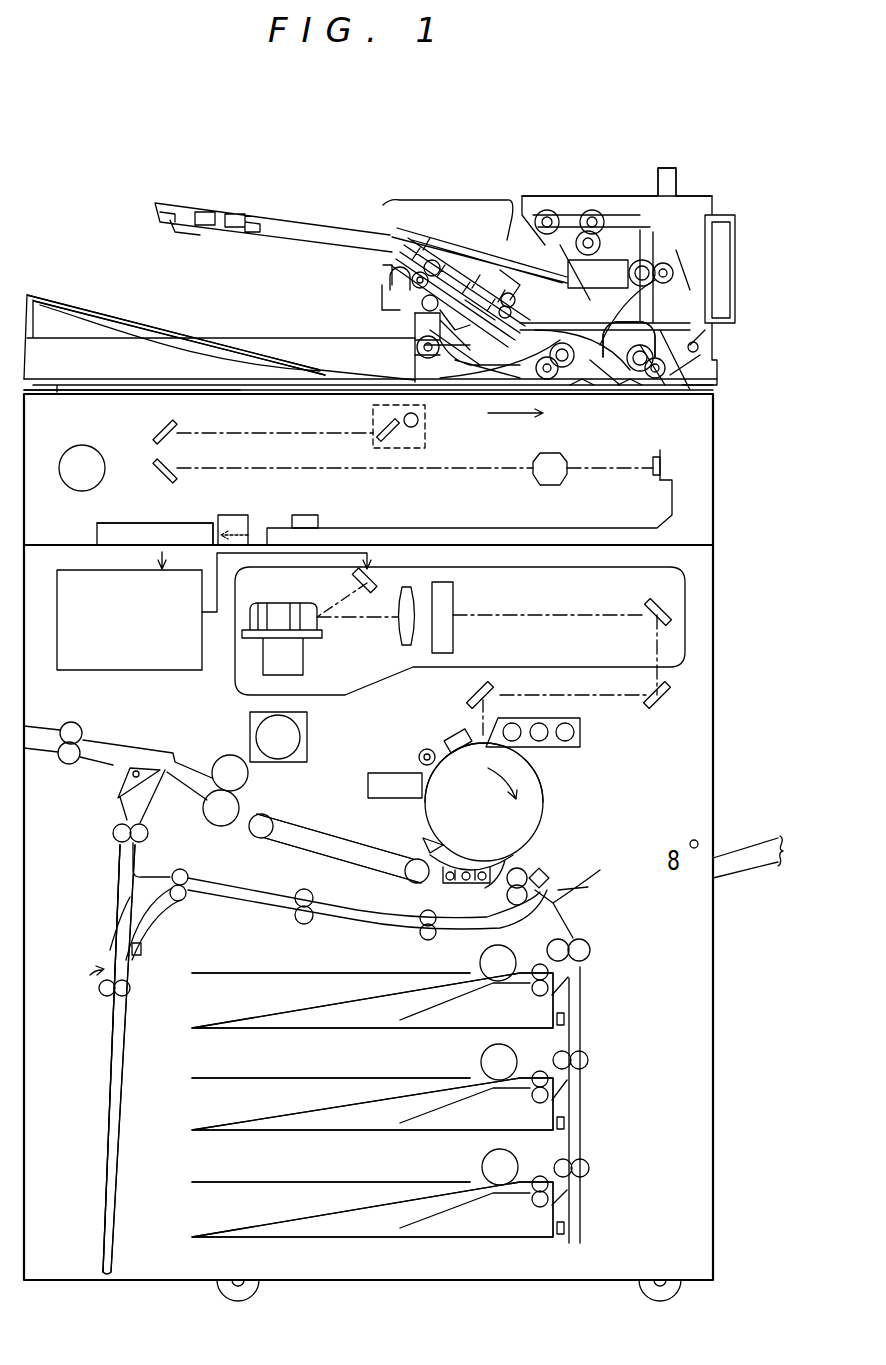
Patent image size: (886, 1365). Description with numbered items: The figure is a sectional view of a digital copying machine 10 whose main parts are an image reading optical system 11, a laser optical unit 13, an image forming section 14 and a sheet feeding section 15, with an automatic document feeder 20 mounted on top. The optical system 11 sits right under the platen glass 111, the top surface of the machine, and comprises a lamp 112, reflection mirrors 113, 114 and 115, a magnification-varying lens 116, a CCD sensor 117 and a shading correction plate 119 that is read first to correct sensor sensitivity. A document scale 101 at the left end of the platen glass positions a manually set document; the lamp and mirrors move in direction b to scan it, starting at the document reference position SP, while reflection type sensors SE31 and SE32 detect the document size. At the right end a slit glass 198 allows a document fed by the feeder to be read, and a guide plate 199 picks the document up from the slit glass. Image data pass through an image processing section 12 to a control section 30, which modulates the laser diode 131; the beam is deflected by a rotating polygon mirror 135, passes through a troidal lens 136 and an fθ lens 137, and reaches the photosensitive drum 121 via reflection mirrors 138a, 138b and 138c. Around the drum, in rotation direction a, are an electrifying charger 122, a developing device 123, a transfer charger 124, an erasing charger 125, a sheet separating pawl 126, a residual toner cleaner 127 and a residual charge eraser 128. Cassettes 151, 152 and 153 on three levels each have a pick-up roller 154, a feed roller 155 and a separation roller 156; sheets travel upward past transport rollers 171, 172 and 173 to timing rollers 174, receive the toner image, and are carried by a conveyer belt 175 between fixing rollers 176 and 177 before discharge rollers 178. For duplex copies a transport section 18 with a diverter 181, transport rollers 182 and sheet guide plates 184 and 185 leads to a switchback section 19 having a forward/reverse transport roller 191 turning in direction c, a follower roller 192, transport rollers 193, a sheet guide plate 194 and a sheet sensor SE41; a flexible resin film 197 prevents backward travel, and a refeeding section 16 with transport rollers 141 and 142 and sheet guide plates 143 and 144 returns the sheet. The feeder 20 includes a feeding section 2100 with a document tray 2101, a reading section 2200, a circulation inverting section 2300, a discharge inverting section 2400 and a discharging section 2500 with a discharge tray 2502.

The copying machine 10 is at (753, 583).
The image reading optical system 11 is at (427, 482).
The image processing section 12 is at (128, 523).
The laser optical unit 13 is at (690, 635).
The image forming section 14 is at (548, 773).
The sheet feeding section 15 is at (188, 1203).
The refeeding section 16 is at (278, 912).
The transport section 18 is at (108, 798).
The switchback section 19 is at (98, 1115).
The automatic document feeder 20 is at (301, 163).
The control section 30 is at (75, 570).
The document scale 101 is at (137, 383).
The platen glass 111 is at (312, 398).
The lamp 112 is at (425, 423).
The reflection mirror 113 is at (373, 442).
The reflection mirror 114 is at (175, 430).
The reflection mirror 115 is at (178, 480).
The lens 116 is at (535, 480).
The CCD sensor 117 is at (653, 470).
The shading correction plate 119 is at (81, 457).
The photosensitive drum 121 is at (545, 795).
The electrifying charger 122 is at (453, 730).
The developing device 123 is at (582, 735).
The transfer charger 124 is at (513, 855).
The erasing charger 125 is at (455, 885).
The sheet separating pawl 126 is at (425, 845).
The residual toner cleaner 127 is at (393, 773).
The residual charge eraser 128 is at (420, 752).
The laser diode 131 is at (368, 592).
The polygon mirror 135 is at (320, 625).
The troidal lens 136 is at (413, 582).
The fθ lens 137 is at (455, 602).
The reflection mirror 138a is at (648, 600).
The reflection mirror 138b is at (660, 702).
The reflection mirror 138c is at (490, 680).
The transport rollers 141 is at (296, 889).
The transport rollers 142 is at (418, 923).
The sheet guide plate 143 is at (348, 908).
The sheet guide plate 144 is at (238, 898).
The cassette 151 is at (293, 990).
The cassette 152 is at (303, 1092).
The cassette 153 is at (269, 1196).
The pick-up roller 154 is at (480, 963).
The feed roller 155 is at (538, 964).
The separation roller 156 is at (533, 990).
The transport rollers 171 is at (589, 1168).
The transport rollers 172 is at (588, 1060).
The transport rollers 173 is at (590, 950).
The timing rollers 174 is at (527, 865).
The conveyer belt 175 is at (345, 823).
The fixing roller 176 is at (225, 755).
The fixing roller 177 is at (236, 805).
The discharge rollers 178 is at (78, 725).
The diverter 181 is at (125, 775).
The transport rollers 182 is at (115, 842).
The sheet guide plate 184 is at (135, 865).
The sheet guide plate 185 is at (117, 867).
The transport roller 191 is at (100, 995).
The roller 192 is at (128, 994).
The transport rollers 193 is at (185, 875).
The sheet guide plate 194 is at (103, 1158).
The flexible resin film 197 is at (112, 907).
The slit glass 198 is at (628, 392).
The guide plate 199 is at (580, 392).
The feeding section 2100 is at (513, 196).
The document tray 2101 is at (352, 215).
The reading section 2200 is at (633, 397).
The circulation inverting section 2300 is at (483, 265).
The discharge inverting section 2400 is at (400, 260).
The discharging section 2500 is at (400, 323).
The discharge tray 2502 is at (232, 344).
The document reference position SP is at (147, 397).
The reflection type sensor SE31 is at (240, 515).
The reflection type sensor SE32 is at (318, 512).
The sheet sensor SE41 is at (144, 950).
The direction of rotation a is at (508, 792).
The scanning direction b is at (524, 413).
The forward rotation direction c is at (93, 964).